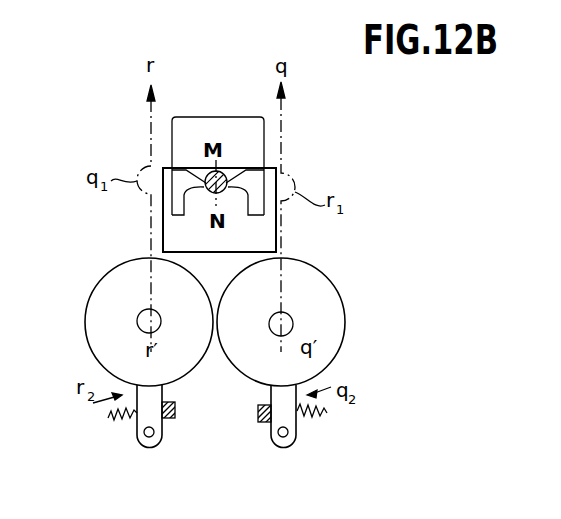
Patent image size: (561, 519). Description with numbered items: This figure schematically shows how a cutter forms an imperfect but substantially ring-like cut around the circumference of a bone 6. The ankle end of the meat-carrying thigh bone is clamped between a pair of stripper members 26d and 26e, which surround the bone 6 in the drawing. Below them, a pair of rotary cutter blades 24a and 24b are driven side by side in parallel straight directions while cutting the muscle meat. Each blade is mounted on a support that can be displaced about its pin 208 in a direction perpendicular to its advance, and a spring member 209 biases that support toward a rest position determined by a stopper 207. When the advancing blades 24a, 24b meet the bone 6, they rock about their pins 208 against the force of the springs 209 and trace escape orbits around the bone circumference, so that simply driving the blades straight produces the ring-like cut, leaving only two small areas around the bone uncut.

The bone 6 is at (205, 174).
The stripper member 26e is at (266, 131).
The stripper member 26d is at (277, 166).
The rotary cutter blade 24a is at (343, 347).
The rotary cutter blade 24b is at (192, 372).
The stopper 207 is at (177, 420).
The pin 208 is at (142, 447).
The spring member 209 is at (112, 422).